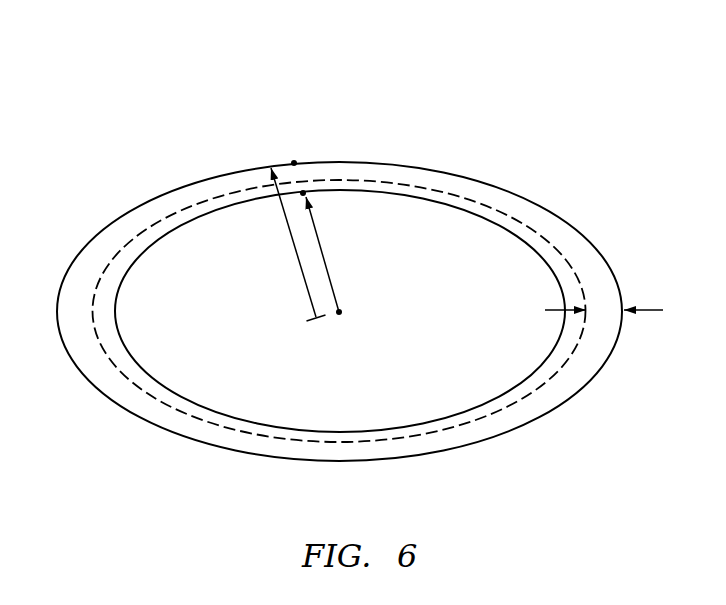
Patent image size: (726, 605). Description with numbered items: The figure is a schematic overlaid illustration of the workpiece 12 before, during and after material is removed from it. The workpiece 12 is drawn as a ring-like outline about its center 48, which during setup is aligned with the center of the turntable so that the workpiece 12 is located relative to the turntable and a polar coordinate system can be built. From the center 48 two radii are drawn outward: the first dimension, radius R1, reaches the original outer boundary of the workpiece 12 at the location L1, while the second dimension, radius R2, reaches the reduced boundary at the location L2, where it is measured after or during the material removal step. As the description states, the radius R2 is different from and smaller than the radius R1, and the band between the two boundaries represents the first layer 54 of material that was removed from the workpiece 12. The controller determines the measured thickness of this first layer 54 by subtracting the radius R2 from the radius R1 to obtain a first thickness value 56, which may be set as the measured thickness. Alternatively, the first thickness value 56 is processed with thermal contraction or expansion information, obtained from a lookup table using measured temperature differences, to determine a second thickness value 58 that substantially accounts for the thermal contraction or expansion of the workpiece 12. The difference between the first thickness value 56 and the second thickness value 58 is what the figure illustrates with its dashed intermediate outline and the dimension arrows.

The workpiece 12 is at (110, 78).
The center 48 is at (339, 315).
The first layer 54 is at (540, 405).
The first thickness value 56 is at (518, 290).
The second thickness value 58 is at (648, 310).
The location L1 is at (294, 161).
The location L2 is at (303, 191).
The radius R1 is at (301, 268).
The radius R2 is at (327, 270).